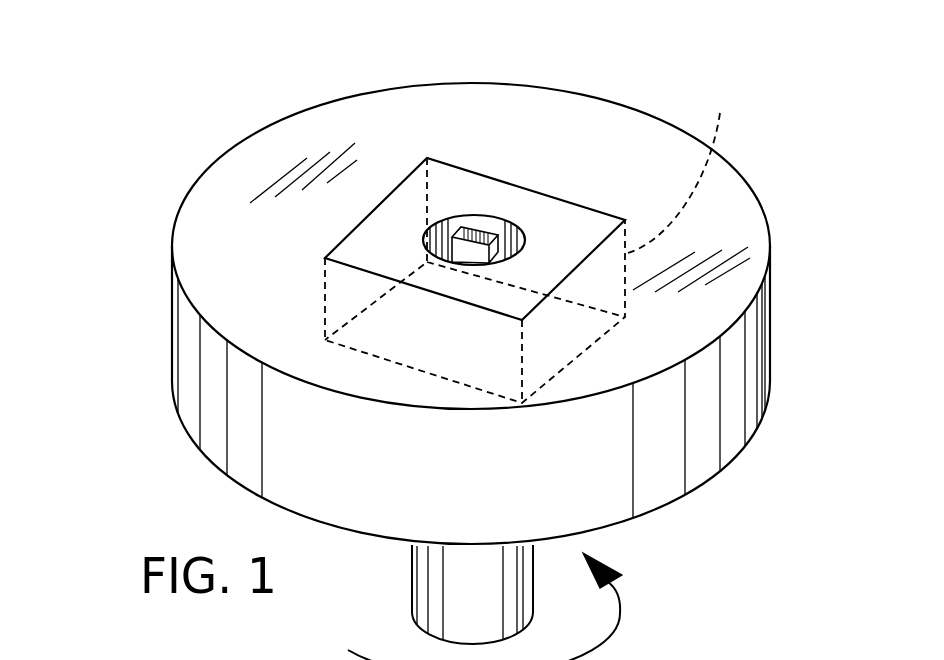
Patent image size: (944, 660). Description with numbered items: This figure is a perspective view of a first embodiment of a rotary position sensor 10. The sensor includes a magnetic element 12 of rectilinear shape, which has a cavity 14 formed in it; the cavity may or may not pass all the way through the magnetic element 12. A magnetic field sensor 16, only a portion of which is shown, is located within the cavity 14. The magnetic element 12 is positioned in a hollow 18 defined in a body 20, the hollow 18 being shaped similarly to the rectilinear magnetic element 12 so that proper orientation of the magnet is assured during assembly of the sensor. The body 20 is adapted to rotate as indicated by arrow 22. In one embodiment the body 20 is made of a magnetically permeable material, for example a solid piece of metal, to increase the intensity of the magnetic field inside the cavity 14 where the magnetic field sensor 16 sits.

The rotary position sensor 10 is at (195, 130).
The magnetic element 12 is at (563, 220).
The cavity 14 is at (447, 217).
The magnetic field sensor 16 is at (485, 232).
The hollow 18 is at (684, 166).
The body 20 is at (674, 503).
The arrow 22 is at (617, 628).